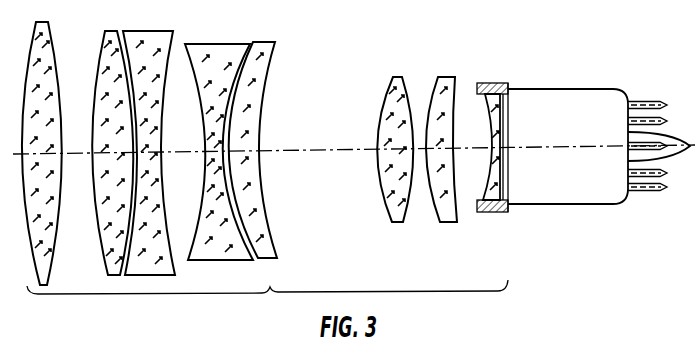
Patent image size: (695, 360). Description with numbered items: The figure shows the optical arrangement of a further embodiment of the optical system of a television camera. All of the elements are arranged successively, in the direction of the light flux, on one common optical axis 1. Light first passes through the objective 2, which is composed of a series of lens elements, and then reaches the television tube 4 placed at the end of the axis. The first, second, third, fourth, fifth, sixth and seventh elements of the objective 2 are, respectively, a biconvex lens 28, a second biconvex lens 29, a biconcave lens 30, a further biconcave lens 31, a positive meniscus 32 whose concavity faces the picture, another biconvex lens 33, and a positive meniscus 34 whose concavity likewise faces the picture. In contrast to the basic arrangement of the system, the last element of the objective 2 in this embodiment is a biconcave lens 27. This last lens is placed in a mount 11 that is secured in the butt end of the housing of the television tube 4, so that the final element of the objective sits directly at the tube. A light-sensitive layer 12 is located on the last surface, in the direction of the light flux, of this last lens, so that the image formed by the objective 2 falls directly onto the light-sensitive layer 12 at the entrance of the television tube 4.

The optical axis 1 is at (345, 148).
The objective 2 is at (267, 305).
The television tube 4 is at (560, 97).
The mount 11 is at (480, 82).
The light-sensitive layer 12 is at (503, 190).
The biconcave lens 27 is at (498, 82).
The biconvex lens 28 is at (45, 50).
The biconvex lens 29 is at (112, 30).
The biconcave lens 30 is at (152, 35).
The biconcave lens 31 is at (220, 50).
The positive meniscus 32 is at (266, 44).
The biconvex lens 33 is at (392, 78).
The positive meniscus 34 is at (440, 78).